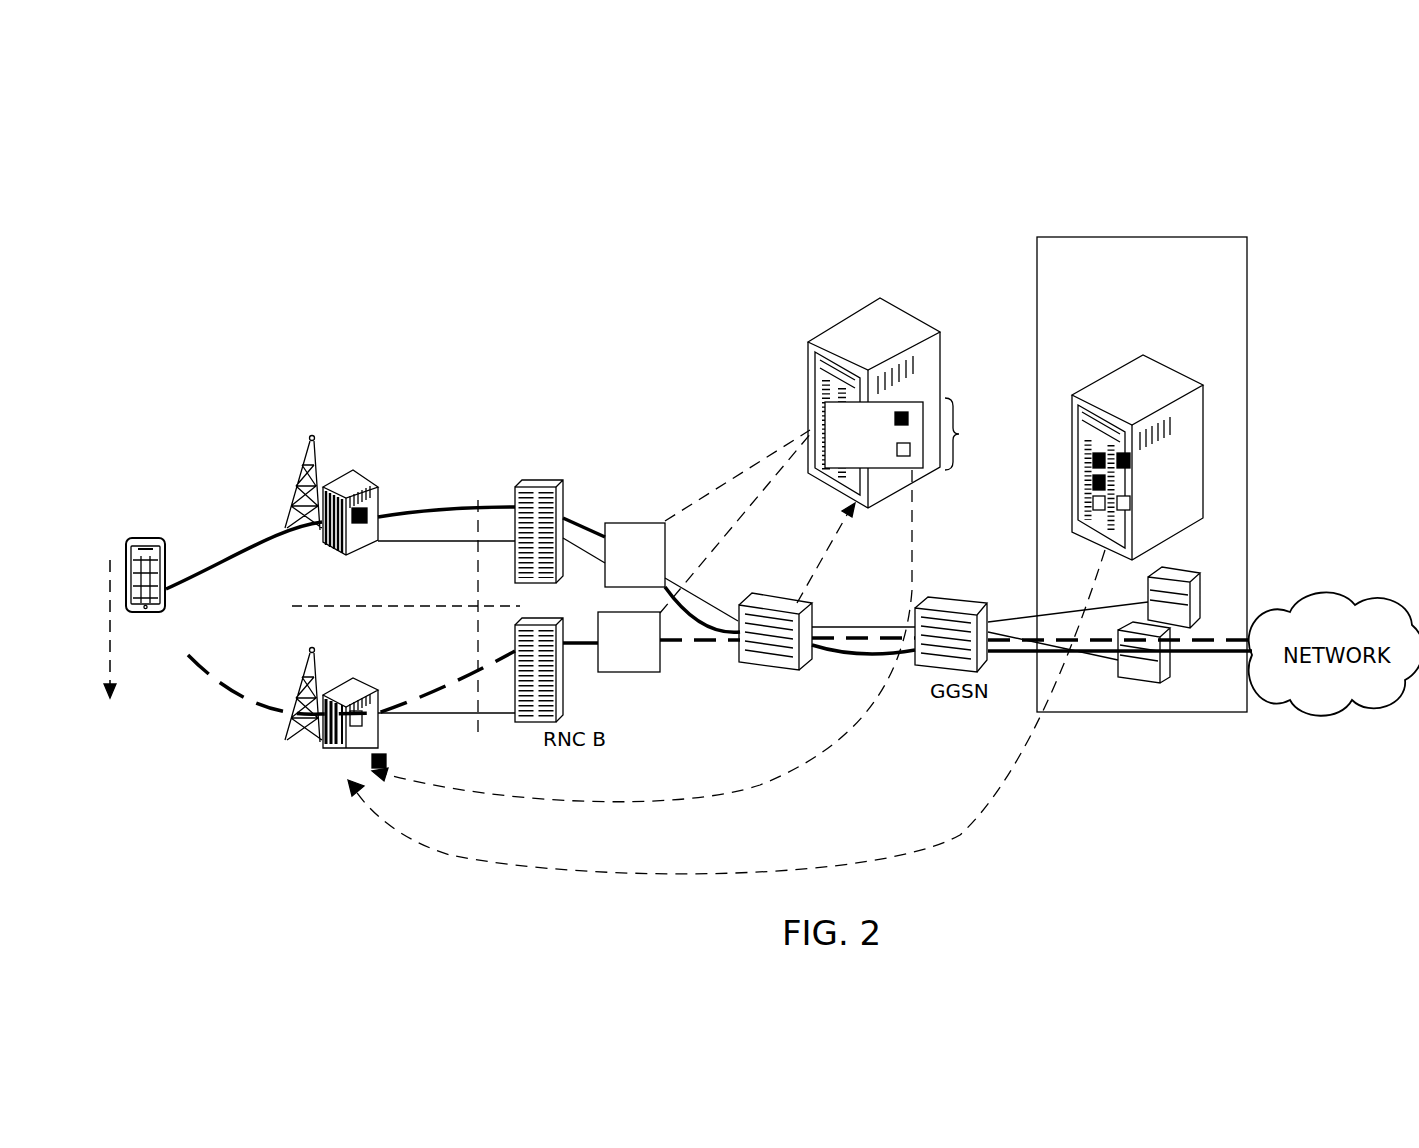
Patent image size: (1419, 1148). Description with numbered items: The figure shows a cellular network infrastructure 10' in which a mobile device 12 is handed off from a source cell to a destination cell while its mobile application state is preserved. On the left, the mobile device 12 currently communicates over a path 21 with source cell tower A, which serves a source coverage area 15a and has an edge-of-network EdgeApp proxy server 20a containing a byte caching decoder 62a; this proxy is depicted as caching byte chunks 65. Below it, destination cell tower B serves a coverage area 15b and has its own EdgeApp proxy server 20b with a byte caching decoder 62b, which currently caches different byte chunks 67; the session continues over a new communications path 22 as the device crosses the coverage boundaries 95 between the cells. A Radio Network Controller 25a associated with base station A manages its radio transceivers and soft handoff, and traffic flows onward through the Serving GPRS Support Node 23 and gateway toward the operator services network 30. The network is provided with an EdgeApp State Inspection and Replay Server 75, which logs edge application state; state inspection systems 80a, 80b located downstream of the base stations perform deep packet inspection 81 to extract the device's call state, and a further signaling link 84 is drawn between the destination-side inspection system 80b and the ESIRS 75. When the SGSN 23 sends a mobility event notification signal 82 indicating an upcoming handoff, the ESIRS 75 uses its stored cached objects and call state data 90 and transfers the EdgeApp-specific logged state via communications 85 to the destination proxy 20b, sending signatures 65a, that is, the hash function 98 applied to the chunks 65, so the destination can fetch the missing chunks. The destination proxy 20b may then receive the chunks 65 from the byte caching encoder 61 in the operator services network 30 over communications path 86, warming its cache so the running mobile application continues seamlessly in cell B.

The cellular network infrastructure 10' is at (690, 341).
The mobile device 12 is at (143, 536).
The source coverage area 15a is at (332, 460).
The destination coverage area 15b is at (327, 710).
The EdgeApp proxy server 20a is at (392, 489).
The destination EdgeApp proxy server 20b is at (380, 738).
The communications path 21 is at (425, 509).
The new communications path 22 is at (218, 683).
The Serving GPRS Support Node (SGSN) 23 is at (806, 665).
The Radio Network Controller (RNC) 25a is at (540, 484).
The operator services network 30 is at (1178, 474).
The byte caching encoder device 61 is at (1192, 425).
The byte caching decoder 62a is at (362, 482).
The byte caching decoder 62b is at (321, 745).
The byte chunks 65 is at (352, 505).
The signatures 65a is at (392, 762).
The byte chunks 67 is at (357, 708).
The EdgeApp State Inspection and Replay Server (ESIRS) 75 is at (878, 393).
The state inspection system 80a is at (634, 523).
The state inspection system 80b is at (648, 672).
The Deep Packet Inspection (DPI) 81 is at (743, 472).
The mobility event notification signal 82 is at (808, 566).
The signaling link 84 is at (738, 531).
The EdgeApp-specific logged state communications 85 is at (910, 556).
The communications path 86 is at (962, 832).
The call state data 90 is at (957, 437).
The coverage boundaries 95 is at (292, 606).
The hash function 98 is at (828, 418).